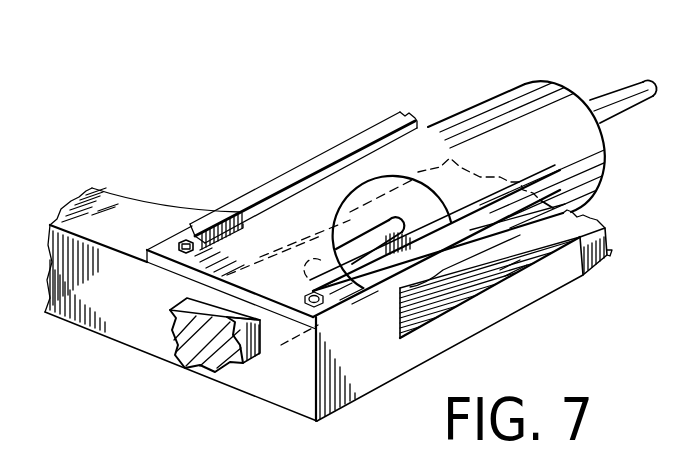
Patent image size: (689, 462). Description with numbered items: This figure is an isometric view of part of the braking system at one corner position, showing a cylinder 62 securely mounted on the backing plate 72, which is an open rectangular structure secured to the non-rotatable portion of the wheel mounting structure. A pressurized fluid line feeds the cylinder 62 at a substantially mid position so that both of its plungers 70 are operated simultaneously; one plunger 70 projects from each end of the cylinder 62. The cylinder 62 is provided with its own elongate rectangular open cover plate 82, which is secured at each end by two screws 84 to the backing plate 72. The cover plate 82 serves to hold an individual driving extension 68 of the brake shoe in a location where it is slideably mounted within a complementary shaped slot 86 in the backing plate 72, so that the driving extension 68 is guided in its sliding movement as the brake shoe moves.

The cylinder 62 is at (495, 110).
The driving extension 68 is at (240, 368).
The plunger 70 is at (375, 223).
The backing plate 72 is at (127, 313).
The cover plate 82 is at (265, 190).
The screw 84 is at (186, 241).
The slot 86 is at (281, 345).